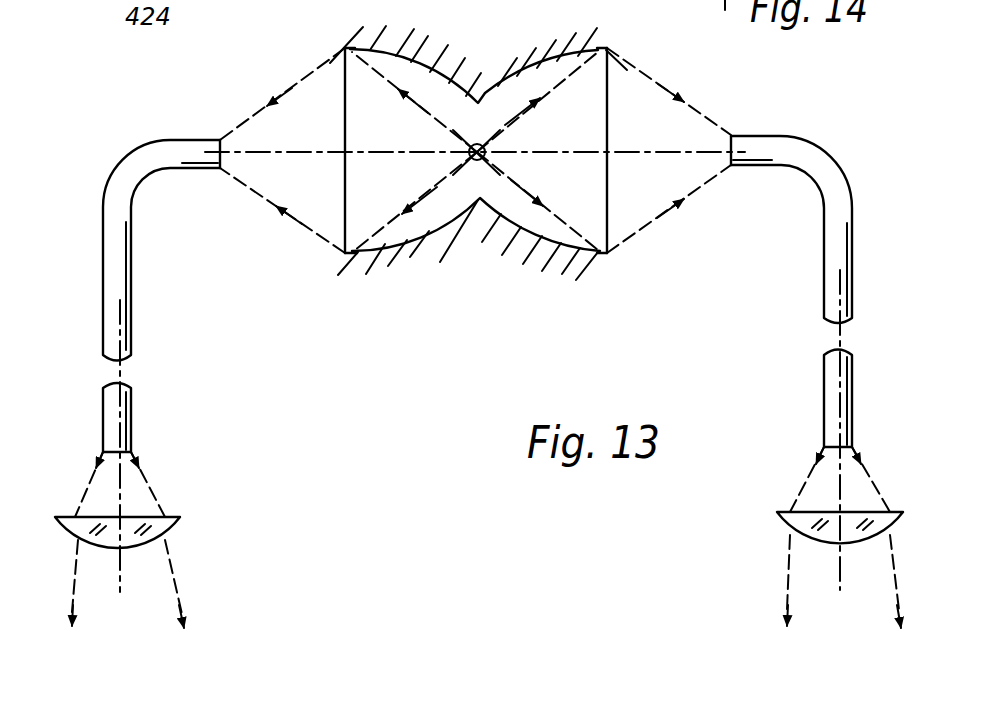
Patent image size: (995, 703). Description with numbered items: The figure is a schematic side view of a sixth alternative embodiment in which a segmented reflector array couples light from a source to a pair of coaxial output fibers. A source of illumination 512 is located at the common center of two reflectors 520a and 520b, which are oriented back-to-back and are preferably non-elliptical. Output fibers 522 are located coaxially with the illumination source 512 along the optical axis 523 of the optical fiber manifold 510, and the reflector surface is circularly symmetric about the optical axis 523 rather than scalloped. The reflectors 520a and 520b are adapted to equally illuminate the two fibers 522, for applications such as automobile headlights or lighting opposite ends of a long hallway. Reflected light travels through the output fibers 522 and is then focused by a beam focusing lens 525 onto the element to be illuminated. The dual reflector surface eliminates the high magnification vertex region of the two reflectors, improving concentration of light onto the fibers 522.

The optical fiber manifold 510 is at (341, 318).
The source of illumination 512 is at (478, 146).
The reflector 520a is at (410, 52).
The reflector 520b is at (548, 262).
The output fibers 522 is at (165, 150).
The optical axis 523 is at (640, 150).
The beam focusing lens 525 is at (182, 517).